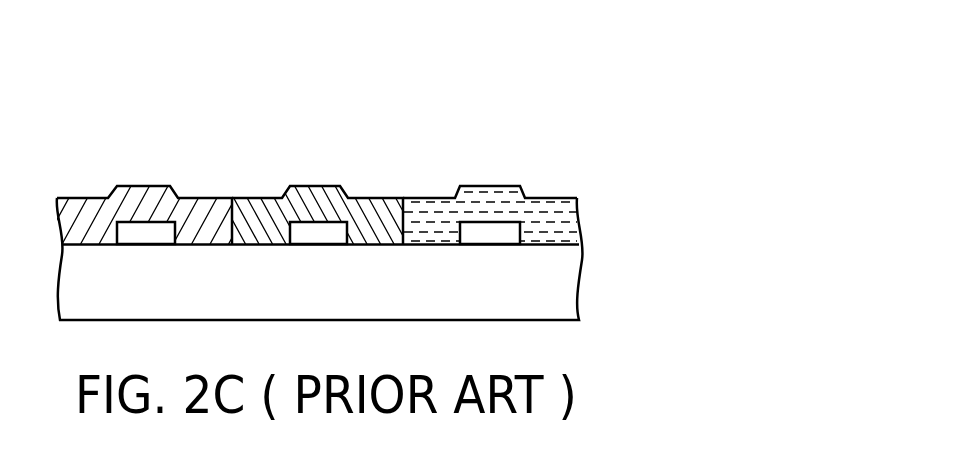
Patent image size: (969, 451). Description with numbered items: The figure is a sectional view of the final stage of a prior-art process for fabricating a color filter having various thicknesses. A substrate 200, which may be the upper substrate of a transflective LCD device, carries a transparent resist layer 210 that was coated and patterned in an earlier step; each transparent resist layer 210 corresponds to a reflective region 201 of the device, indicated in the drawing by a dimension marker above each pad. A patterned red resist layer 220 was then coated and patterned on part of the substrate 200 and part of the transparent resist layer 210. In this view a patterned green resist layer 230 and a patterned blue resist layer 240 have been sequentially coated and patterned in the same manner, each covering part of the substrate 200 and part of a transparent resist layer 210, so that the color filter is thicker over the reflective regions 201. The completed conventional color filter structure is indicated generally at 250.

The substrate 200 is at (553, 282).
The reflective region 201 is at (166, 67).
The transparent resist layer 210 is at (147, 231).
The patterned red resist layer 220 is at (82, 228).
The patterned green resist layer 230 is at (253, 228).
The patterned blue resist layer 240 is at (425, 230).
The display panel (prior art) 250 is at (623, 138).